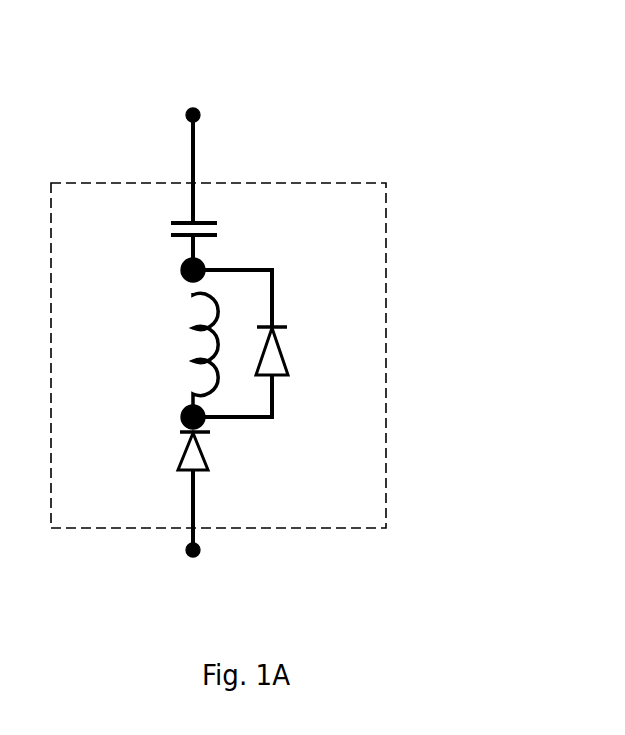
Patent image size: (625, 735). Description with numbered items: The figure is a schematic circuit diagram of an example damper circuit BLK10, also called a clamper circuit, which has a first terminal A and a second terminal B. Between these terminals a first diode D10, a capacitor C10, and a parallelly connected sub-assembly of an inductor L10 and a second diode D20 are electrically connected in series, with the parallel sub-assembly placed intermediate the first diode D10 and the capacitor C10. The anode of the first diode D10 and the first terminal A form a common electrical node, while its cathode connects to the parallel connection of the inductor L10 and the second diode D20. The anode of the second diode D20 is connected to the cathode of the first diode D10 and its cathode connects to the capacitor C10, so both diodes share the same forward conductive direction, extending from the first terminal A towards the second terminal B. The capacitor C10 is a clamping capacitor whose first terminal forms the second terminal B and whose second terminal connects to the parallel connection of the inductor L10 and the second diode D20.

The damper circuit BLK10 is at (402, 239).
The second terminal B is at (219, 108).
The first terminal A is at (222, 554).
The capacitor C10 is at (154, 236).
The inductor L10 is at (170, 347).
The second diode D20 is at (298, 354).
The first diode D10 is at (230, 454).